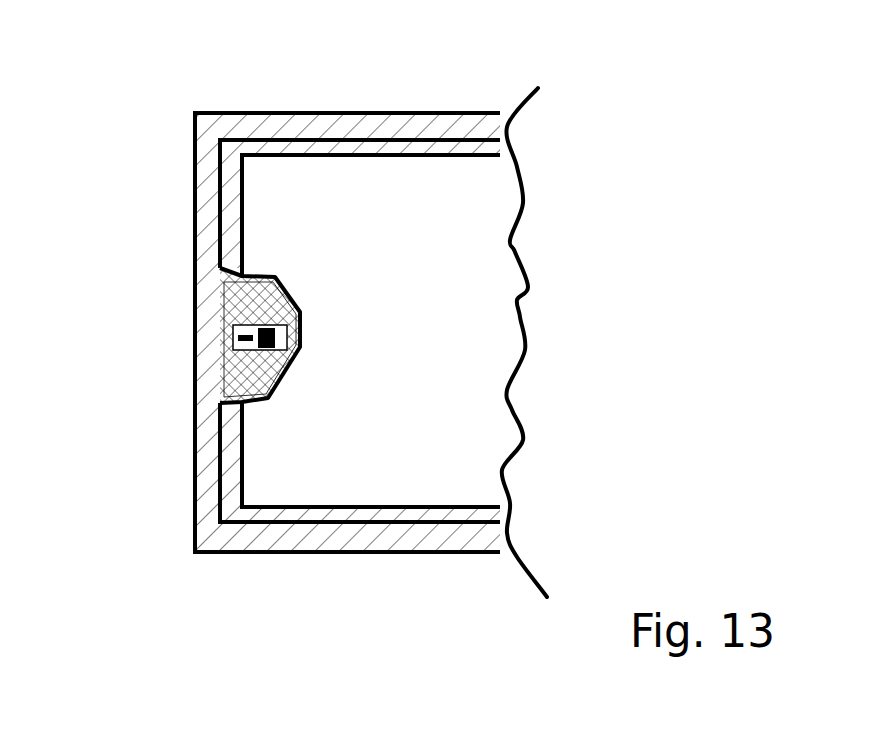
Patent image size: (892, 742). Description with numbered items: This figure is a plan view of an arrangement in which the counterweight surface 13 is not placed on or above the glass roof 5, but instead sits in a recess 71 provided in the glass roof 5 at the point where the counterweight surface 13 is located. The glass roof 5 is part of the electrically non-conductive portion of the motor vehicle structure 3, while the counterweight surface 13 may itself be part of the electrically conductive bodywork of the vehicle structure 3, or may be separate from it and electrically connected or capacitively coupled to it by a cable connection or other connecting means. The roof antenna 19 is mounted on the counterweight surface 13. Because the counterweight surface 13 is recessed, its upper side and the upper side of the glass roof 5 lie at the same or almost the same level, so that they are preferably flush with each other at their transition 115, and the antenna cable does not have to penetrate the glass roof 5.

The vehicle structure 3 is at (468, 122).
The glass window 5 is at (342, 187).
The counterweight surface 13 is at (240, 372).
The roof antenna 19 is at (228, 338).
The recess 71 is at (262, 283).
The transition 115 is at (280, 373).